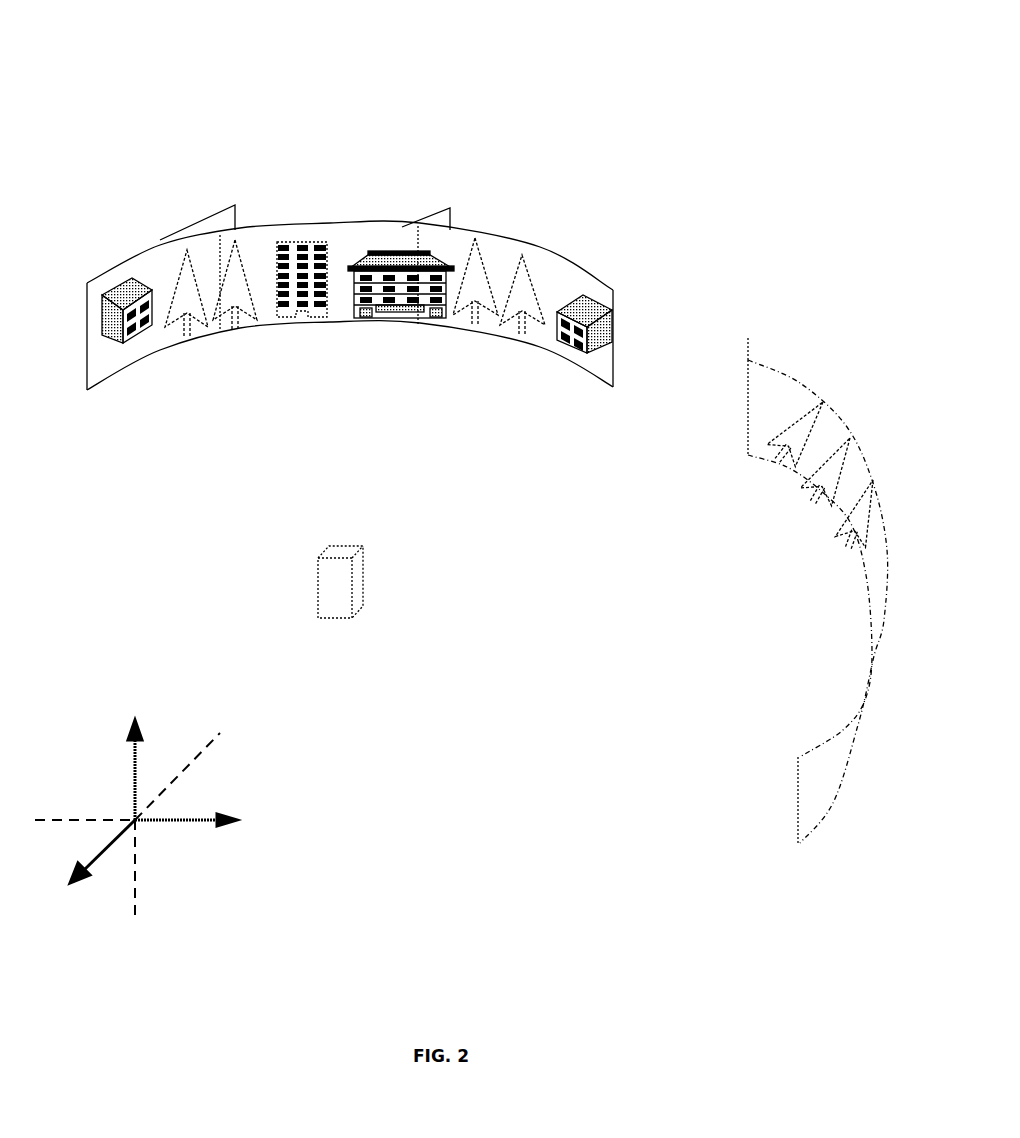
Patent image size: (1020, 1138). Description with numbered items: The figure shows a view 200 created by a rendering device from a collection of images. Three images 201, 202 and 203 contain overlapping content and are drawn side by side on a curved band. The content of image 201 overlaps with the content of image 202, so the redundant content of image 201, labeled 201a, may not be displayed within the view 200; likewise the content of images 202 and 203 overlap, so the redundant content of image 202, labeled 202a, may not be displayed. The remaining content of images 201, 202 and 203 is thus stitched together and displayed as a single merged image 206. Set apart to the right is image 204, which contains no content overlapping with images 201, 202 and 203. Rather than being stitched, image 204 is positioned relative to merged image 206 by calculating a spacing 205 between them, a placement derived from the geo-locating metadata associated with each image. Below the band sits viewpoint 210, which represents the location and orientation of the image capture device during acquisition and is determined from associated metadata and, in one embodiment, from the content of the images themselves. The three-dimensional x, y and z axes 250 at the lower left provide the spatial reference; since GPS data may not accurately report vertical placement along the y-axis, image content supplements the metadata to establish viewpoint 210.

The view 200 is at (270, 75).
The redundant content of image 201 201a is at (215, 215).
The redundant content of image 202 202a is at (430, 215).
The image 201 is at (135, 355).
The image 202 is at (280, 327).
The merged image 206 is at (368, 233).
The image 203 is at (507, 337).
The spacing 205 is at (633, 282).
The image 204 is at (865, 600).
The viewpoint 210 is at (335, 610).
The 3D x, y and z axes 250 is at (205, 870).